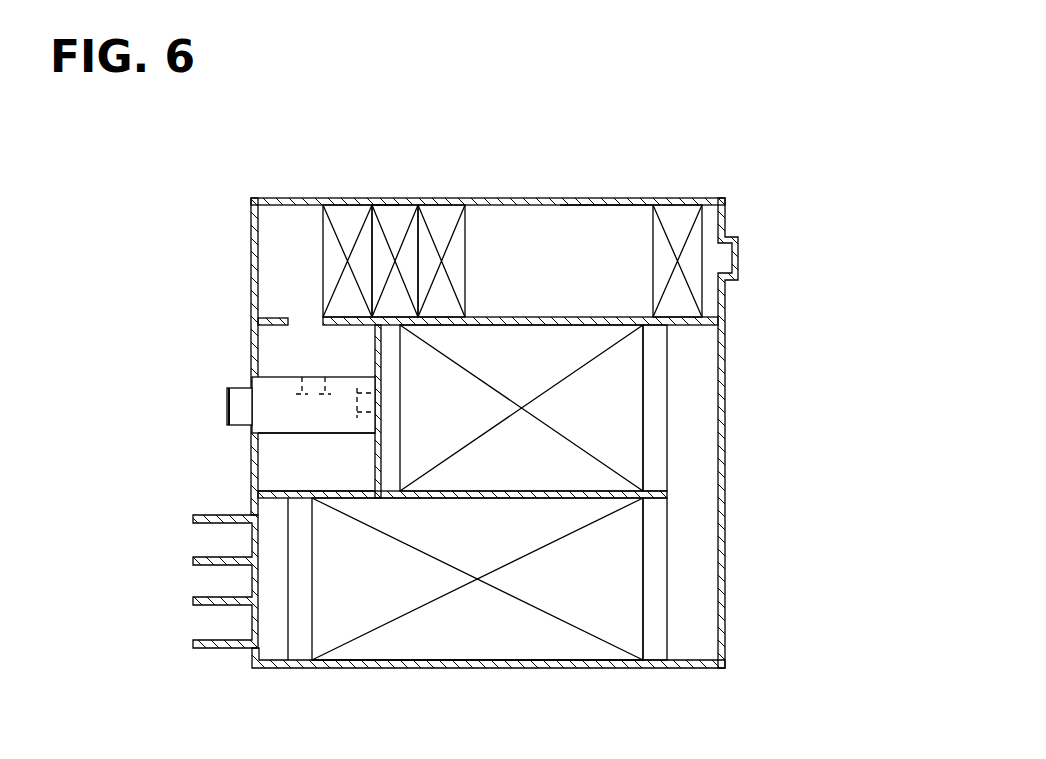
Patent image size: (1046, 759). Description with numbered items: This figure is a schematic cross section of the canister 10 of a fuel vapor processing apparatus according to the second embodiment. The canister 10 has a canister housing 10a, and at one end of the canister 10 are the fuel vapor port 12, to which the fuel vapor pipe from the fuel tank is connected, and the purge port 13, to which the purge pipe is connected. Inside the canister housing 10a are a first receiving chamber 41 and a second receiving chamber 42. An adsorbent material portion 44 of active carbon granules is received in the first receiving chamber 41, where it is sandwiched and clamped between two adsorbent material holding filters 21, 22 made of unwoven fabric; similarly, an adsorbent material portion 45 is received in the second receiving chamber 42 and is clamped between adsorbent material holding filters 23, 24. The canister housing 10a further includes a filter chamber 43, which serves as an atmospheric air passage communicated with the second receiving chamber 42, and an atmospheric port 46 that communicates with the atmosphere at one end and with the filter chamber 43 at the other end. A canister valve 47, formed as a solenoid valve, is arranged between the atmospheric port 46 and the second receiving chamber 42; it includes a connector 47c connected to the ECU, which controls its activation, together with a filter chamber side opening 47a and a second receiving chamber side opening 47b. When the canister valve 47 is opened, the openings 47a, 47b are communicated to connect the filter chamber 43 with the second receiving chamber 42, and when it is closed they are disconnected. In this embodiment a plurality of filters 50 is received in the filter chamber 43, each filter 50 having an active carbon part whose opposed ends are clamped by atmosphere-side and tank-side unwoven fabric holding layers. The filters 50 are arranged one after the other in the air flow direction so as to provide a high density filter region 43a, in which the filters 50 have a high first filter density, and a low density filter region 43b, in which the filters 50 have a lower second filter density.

The canister 10 is at (497, 396).
The canister housing 10a is at (712, 197).
The fuel vapor port 12 is at (205, 647).
The purge port 13 is at (205, 528).
The adsorbent material holding filter 21 is at (295, 636).
The adsorbent material holding filter 22 is at (655, 601).
The adsorbent material holding filter 23 is at (650, 428).
The adsorbent material holding filter 24 is at (387, 457).
The first receiving chamber 41 is at (425, 654).
The second receiving chamber 42 is at (553, 485).
The filter chamber 43 is at (598, 204).
The high density filter region 43a is at (385, 210).
The low density filter region 43b is at (633, 210).
The adsorbent material portion 44 is at (626, 560).
The adsorbent material portion 45 is at (628, 392).
The atmospheric port 46 is at (728, 256).
The canister valve 47 is at (302, 366).
The filter chamber side opening 47a is at (310, 370).
The second receiving chamber side opening 47b is at (380, 405).
The connector 47c is at (227, 407).
The filter 50 is at (345, 210).